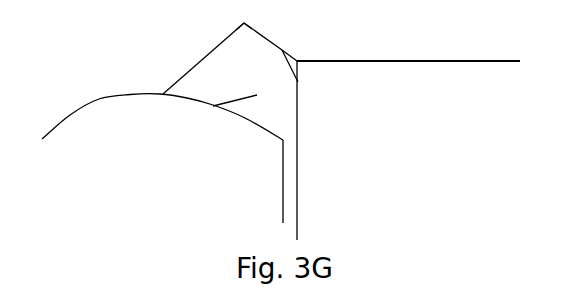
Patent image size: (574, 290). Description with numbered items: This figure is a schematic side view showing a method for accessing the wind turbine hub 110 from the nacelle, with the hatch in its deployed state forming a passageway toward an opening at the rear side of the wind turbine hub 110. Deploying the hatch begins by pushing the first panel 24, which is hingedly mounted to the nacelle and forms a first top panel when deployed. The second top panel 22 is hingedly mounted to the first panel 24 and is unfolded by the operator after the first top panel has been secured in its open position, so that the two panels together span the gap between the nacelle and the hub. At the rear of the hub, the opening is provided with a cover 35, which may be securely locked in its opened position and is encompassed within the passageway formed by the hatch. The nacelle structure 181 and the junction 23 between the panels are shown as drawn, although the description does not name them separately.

The wind turbine hub 110 is at (99, 99).
The second top panel 22 is at (185, 72).
The apex 23 is at (242, 22).
The first panel 24 is at (272, 40).
The cover 35 is at (234, 93).
The top surface 181 is at (407, 60).